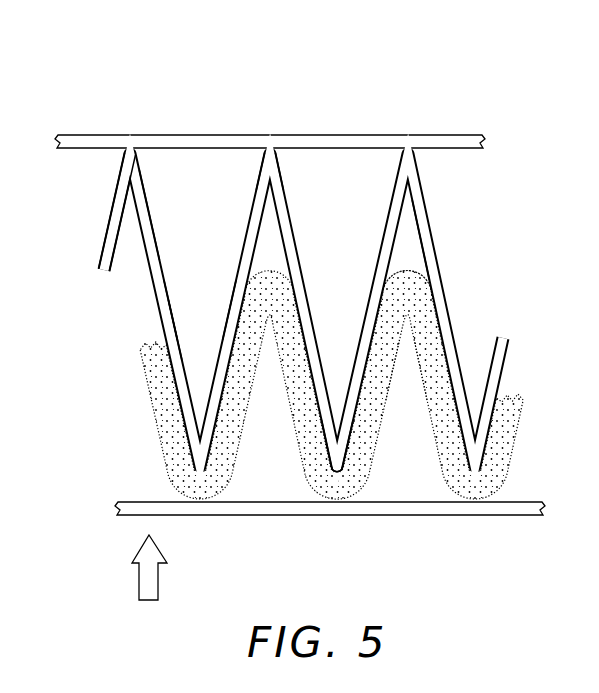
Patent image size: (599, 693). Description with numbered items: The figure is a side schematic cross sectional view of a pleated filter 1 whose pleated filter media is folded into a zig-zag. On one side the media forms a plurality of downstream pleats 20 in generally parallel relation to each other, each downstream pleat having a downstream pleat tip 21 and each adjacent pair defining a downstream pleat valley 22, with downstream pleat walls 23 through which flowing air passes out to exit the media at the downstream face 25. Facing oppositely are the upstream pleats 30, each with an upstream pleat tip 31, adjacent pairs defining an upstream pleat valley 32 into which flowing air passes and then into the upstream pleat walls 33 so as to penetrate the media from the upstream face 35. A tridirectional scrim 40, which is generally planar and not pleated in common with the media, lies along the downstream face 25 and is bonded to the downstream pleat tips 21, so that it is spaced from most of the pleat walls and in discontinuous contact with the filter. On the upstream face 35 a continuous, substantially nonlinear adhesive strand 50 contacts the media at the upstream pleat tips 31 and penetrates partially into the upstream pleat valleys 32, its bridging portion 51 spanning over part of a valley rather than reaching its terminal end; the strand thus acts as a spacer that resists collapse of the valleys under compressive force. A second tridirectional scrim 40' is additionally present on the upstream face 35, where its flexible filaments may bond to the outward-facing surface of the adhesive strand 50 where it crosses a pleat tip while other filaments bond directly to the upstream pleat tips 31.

The pleated filter 1 is at (300, 346).
The downstream pleats 20 is at (270, 167).
The downstream pleat tip 21 is at (271, 147).
The downstream pleat valley 22 is at (180, 232).
The downstream pleat walls 23 is at (226, 310).
The downstream face 25 is at (151, 197).
The upstream pleats 30 is at (337, 460).
The upstream pleat tip 31 is at (337, 474).
The upstream pleat valley 32 is at (408, 228).
The upstream pleat walls 33 is at (372, 357).
The upstream face 35 is at (161, 325).
The tridirectional scrim 40 is at (270, 110).
The second tridirectional scrim 40' is at (330, 530).
The adhesive strand 50 is at (160, 413).
The bridging portion 51 is at (408, 273).